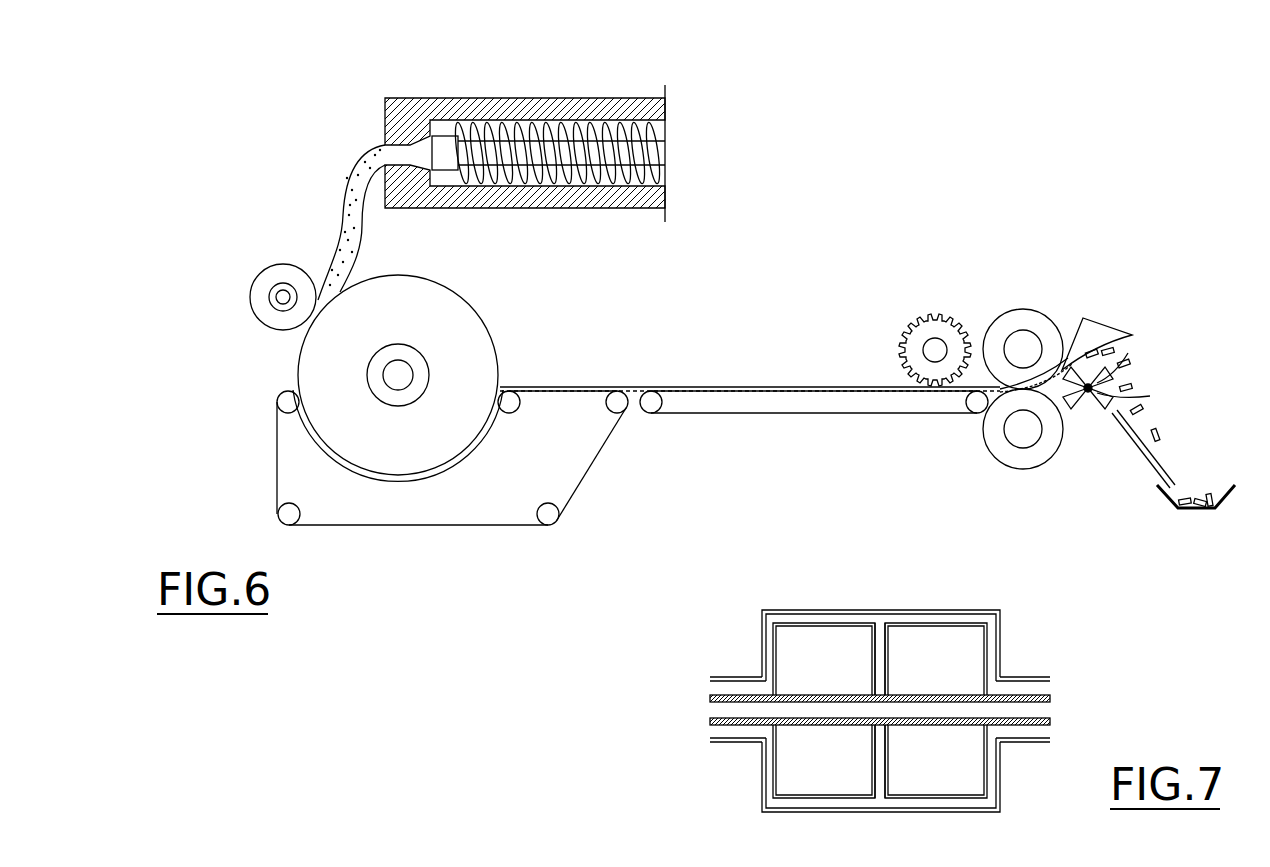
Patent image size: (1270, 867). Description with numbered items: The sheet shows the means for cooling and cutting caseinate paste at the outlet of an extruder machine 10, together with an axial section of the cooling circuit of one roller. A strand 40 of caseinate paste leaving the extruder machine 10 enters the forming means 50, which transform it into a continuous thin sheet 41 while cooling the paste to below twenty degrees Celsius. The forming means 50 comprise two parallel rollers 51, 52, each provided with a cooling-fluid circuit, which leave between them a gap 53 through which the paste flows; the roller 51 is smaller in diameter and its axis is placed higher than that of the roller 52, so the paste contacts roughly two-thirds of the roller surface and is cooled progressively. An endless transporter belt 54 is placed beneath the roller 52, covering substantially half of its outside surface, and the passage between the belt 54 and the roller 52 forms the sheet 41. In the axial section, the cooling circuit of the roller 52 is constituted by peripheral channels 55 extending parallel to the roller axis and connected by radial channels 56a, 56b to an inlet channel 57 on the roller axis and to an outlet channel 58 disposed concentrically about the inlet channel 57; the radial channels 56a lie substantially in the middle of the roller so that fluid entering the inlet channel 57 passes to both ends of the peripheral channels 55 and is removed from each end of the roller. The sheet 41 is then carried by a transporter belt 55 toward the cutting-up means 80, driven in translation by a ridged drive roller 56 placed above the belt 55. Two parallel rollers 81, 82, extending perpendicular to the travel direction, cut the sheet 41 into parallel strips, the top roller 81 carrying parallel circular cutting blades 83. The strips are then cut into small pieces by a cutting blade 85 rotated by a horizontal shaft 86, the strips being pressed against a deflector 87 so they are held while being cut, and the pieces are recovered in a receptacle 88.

In FIG. 6, the extruder machine 10 is at (548, 86).
In FIG. 6, the strand of caseinate paste 40 is at (345, 210).
In FIG. 6, the sheet 41 is at (572, 387).
In FIG. 6, the forming means 50 is at (270, 444).
In FIG. 6, the roller 51 is at (258, 310).
In FIG. 6, the roller 52 is at (452, 322).
In FIG. 7, the roller 52 is at (1022, 640).
In FIG. 6, the gap 53 is at (318, 272).
In FIG. 6, the endless transporter belt 54 is at (365, 526).
In FIG. 6, the peripheral channels / transporter belt 55 is at (875, 413).
In FIG. 7, the peripheral channels / transporter belt 55 is at (822, 612).
In FIG. 6, the drive roller 56 is at (915, 345).
In FIG. 7, the radial channels 56a is at (885, 668).
In FIG. 7, the radial channels 56b is at (773, 645).
In FIG. 7, the inlet channel 57 is at (730, 710).
In FIG. 7, the outlet channel 58 is at (722, 690).
In FIG. 6, the cutting-up means 80 is at (1034, 288).
In FIG. 6, the top roller 81 is at (1030, 345).
In FIG. 6, the roller 82 is at (1027, 432).
In FIG. 6, the circular cutting blades 83 is at (990, 318).
In FIG. 6, the cutting blade 85 is at (1110, 368).
In FIG. 6, the horizontal shaft 86 is at (1100, 395).
In FIG. 6, the deflector 87 is at (1100, 322).
In FIG. 6, the receptacle 88 is at (1185, 508).